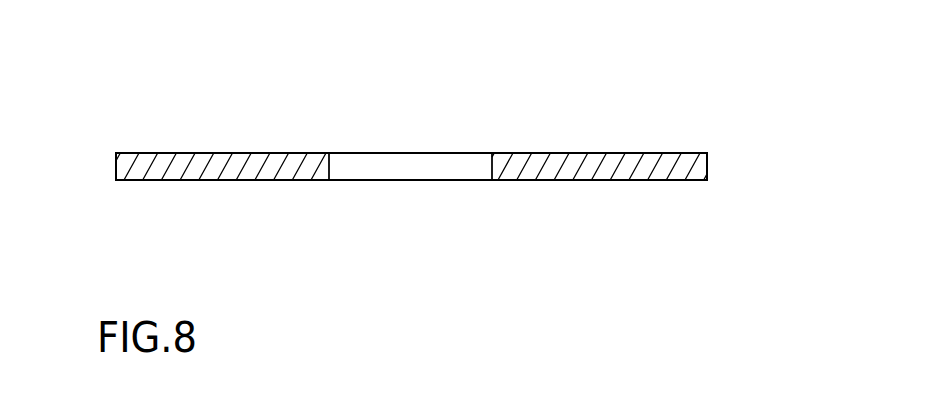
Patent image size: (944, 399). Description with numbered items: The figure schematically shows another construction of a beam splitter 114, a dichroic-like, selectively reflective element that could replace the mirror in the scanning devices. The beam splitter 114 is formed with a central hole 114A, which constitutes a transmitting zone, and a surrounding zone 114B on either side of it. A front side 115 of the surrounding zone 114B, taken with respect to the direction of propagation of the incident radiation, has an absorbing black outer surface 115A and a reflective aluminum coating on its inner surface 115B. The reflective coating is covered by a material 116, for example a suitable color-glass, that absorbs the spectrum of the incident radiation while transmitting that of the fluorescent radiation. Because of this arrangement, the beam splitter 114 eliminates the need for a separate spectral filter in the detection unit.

The beam splitter 114 is at (188, 130).
The central hole 114A is at (393, 161).
The surrounding zone 114B is at (168, 152).
The front side 115 is at (255, 151).
The absorbing outer surface 115A is at (229, 153).
The inner surface 115B is at (343, 123).
The material 116 is at (550, 180).